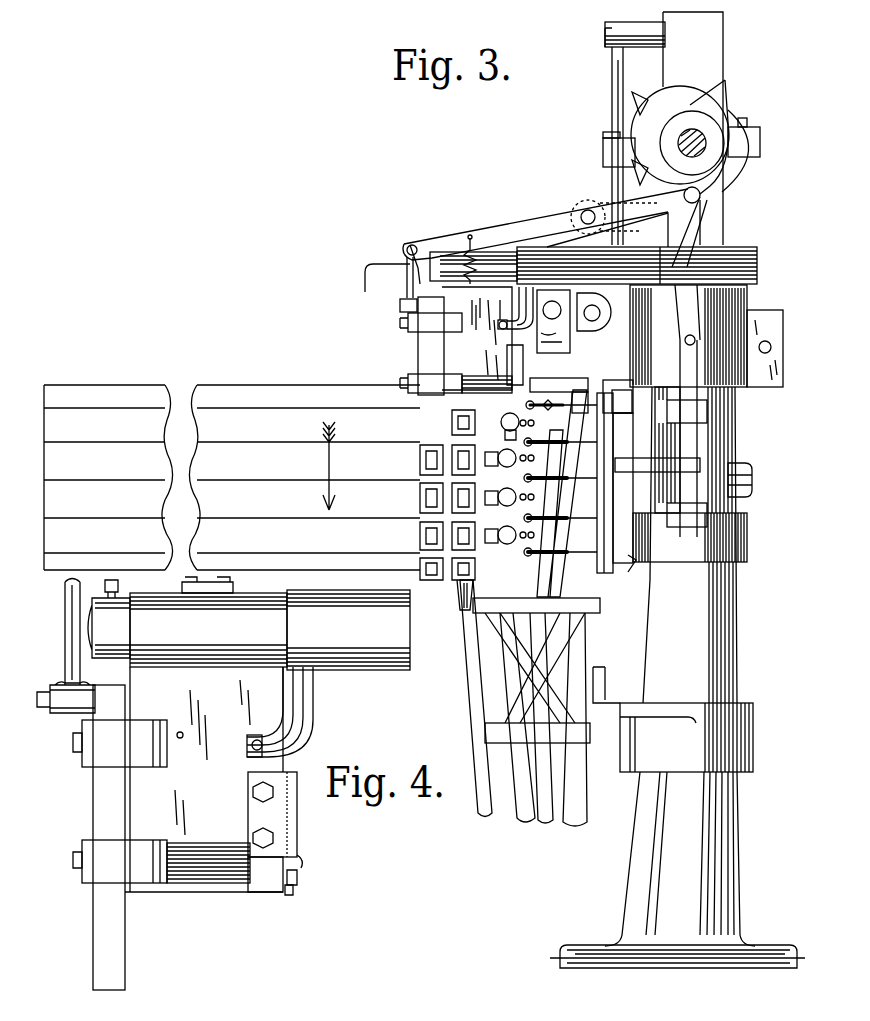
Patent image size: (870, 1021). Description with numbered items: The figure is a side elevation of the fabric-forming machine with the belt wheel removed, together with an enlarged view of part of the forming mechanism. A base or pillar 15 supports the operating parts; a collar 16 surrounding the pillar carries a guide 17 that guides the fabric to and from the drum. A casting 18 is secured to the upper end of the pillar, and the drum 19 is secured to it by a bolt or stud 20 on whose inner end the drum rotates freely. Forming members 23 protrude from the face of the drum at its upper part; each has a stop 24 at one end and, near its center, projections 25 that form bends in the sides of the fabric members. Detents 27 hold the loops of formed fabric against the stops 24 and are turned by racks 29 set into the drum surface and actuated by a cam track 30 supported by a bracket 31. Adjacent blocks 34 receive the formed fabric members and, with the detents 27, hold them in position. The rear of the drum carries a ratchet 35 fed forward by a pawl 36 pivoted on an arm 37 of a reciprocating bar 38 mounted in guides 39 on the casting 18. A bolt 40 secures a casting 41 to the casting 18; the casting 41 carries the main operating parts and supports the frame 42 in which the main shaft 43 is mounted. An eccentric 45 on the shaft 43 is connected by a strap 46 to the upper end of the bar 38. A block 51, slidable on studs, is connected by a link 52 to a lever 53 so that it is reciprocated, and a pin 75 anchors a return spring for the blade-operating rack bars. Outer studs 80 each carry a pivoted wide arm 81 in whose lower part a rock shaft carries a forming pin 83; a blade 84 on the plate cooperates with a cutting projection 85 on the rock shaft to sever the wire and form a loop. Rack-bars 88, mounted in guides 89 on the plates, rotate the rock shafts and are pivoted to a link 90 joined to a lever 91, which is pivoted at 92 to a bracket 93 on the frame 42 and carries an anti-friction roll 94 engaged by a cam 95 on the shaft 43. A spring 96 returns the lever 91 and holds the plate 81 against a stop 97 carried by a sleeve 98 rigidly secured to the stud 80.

In FIG. 3, the base or pillar 15 is at (715, 828).
In FIG. 3, the collar 16 is at (748, 735).
In FIG. 3, the guide 17 is at (472, 690).
In FIG. 3, the casting 18 is at (745, 532).
In FIG. 3, the drum 19 is at (232, 477).
In FIG. 3, the bolt or stud 20 is at (752, 475).
In FIG. 3, the forming members 23 is at (534, 375).
In FIG. 3, the stop 24 is at (530, 552).
In FIG. 3, the projections 25 is at (555, 385).
In FIG. 3, the detents 27 is at (500, 500).
In FIG. 3, the racks 29 is at (497, 530).
In FIG. 3, the cam track 30 is at (603, 390).
In FIG. 3, the bracket 31 is at (622, 380).
In FIG. 3, the blocks 34 is at (420, 536).
In FIG. 3, the ratchet 35 is at (624, 577).
In FIG. 3, the pawl 36 is at (655, 470).
In FIG. 3, the arm 37 is at (674, 472).
In FIG. 3, the reciprocating bar 38 is at (678, 450).
In FIG. 3, the guides 39 is at (687, 463).
In FIG. 3, the bolt 40 is at (770, 344).
In FIG. 3, the casting 41 is at (748, 305).
In FIG. 3, the frame 42 is at (722, 55).
In FIG. 3, the main shaft 43 is at (696, 138).
In FIG. 3, the eccentric 45 is at (650, 133).
In FIG. 3, the strap 46 is at (689, 367).
In FIG. 3, the block 51 is at (553, 321).
In FIG. 3, the link 52 is at (583, 331).
In FIG. 3, the lever 53 is at (620, 298).
In FIG. 3, the pin 75 is at (365, 284).
In FIG. 3, the studs 80 is at (418, 240).
In FIG. 4, the studs 80 is at (90, 625).
In FIG. 3, the wide arm 81 is at (500, 328).
In FIG. 4, the wide arm 81 is at (204, 779).
In FIG. 4, the forming pin 83 is at (297, 866).
In FIG. 4, the blade 84 is at (297, 831).
In FIG. 4, the cutting projection 85 is at (289, 895).
In FIG. 3, the rack-bars 88 is at (420, 350).
In FIG. 4, the rack-bars 88 is at (105, 795).
In FIG. 3, the guides 89 is at (410, 322).
In FIG. 4, the guides 89 is at (92, 748).
In FIG. 3, the link 90 is at (407, 288).
In FIG. 4, the link 90 is at (65, 592).
In FIG. 3, the lever 91 is at (498, 220).
In FIG. 3, the pivot 92 is at (586, 209).
In FIG. 3, the bracket 93 is at (607, 230).
In FIG. 3, the anti-friction roll 94 is at (700, 197).
In FIG. 3, the cam 95 is at (724, 82).
In FIG. 3, the spring 96 is at (478, 292).
In FIG. 3, the stop 97 is at (503, 320).
In FIG. 4, the stop 97 is at (257, 740).
In FIG. 3, the sleeve 98 is at (545, 230).
In FIG. 4, the sleeve 98 is at (249, 623).